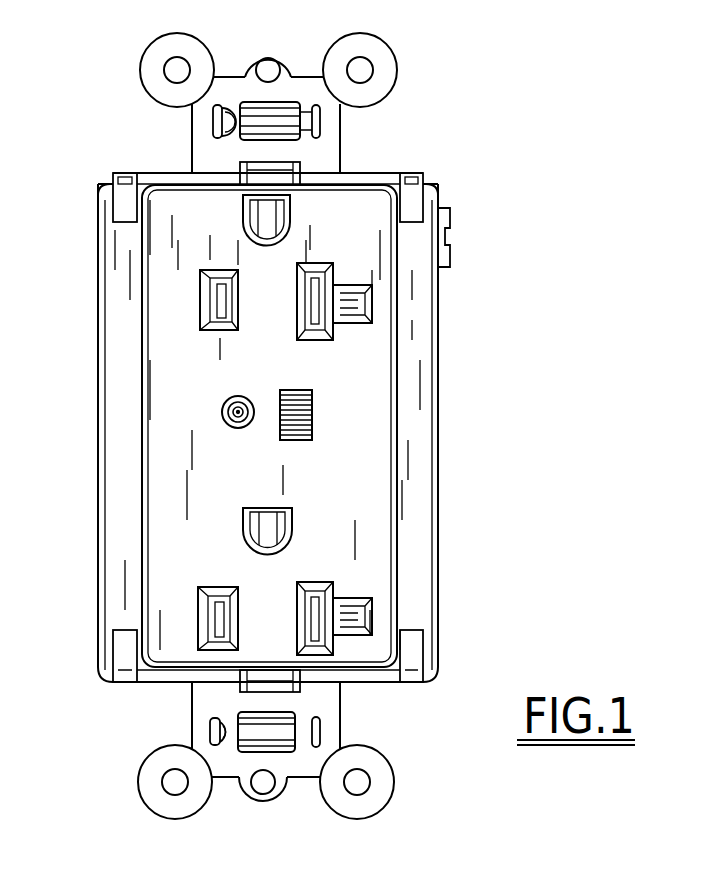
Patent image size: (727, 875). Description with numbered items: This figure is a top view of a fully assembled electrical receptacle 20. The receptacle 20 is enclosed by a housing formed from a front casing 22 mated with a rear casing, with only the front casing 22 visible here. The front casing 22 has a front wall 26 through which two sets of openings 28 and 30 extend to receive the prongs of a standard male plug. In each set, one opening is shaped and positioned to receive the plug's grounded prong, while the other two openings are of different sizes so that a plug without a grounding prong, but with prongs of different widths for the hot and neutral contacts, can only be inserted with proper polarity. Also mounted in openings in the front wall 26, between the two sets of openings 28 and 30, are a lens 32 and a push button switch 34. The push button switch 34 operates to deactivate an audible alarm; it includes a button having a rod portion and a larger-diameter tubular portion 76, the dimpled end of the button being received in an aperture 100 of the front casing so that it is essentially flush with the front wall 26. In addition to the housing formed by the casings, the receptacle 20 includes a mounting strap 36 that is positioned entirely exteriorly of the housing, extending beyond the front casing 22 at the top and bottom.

The receptacle 20 is at (95, 172).
The front casing 22 is at (98, 415).
The front wall 26 is at (158, 264).
The openings 28 is at (245, 224).
The openings 30 is at (224, 585).
The lens 32 is at (312, 395).
The push button switch 34 is at (225, 422).
The mounting strap 36 is at (342, 137).
The tubular portion 76 is at (233, 397).
The aperture 100 is at (251, 427).